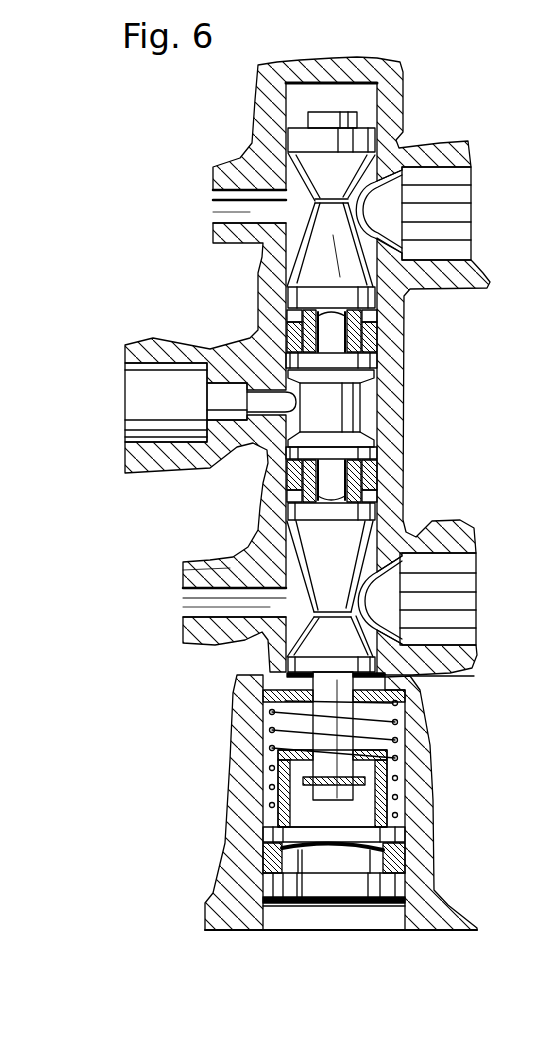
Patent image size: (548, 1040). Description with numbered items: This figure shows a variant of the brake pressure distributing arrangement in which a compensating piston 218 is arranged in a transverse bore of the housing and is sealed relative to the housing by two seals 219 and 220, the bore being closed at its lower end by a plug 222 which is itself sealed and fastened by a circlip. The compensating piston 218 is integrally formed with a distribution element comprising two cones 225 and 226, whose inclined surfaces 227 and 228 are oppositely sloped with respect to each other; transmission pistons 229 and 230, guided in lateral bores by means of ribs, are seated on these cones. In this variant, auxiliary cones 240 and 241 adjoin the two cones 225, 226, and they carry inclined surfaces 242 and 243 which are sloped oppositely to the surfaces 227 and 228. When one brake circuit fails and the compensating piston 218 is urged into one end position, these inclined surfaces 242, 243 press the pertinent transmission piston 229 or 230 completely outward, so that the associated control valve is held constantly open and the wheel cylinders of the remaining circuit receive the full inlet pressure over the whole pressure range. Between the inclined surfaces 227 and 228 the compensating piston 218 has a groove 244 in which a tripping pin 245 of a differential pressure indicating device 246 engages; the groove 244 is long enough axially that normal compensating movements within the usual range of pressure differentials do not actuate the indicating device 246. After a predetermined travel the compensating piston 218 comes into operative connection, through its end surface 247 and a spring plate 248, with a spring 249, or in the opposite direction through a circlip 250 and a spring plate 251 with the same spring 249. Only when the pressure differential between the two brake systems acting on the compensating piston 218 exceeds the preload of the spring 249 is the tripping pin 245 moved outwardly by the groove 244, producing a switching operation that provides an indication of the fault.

The compensating piston 218 is at (365, 361).
The seal 219 is at (371, 337).
The seal 220 is at (371, 478).
The plug 222 is at (312, 857).
The cone 225 is at (320, 260).
The cone 226 is at (318, 545).
The inclined surface 227 is at (298, 237).
The inclined surface 228 is at (198, 563).
The transmission piston 229 is at (440, 174).
The transmission piston 230 is at (452, 562).
The auxiliary cone 240 is at (280, 194).
The auxiliary cone 241 is at (273, 651).
The inclined surface 242 is at (317, 175).
The inclined surface 243 is at (265, 622).
The groove 244 is at (371, 407).
The tripping pin 245 is at (264, 402).
The differential pressure indicating device 246 is at (135, 389).
The end surface 247 is at (474, 677).
The spring plate 248 is at (398, 723).
The spring 249 is at (398, 758).
The circlip 250 is at (398, 805).
The spring plate 251 is at (398, 780).